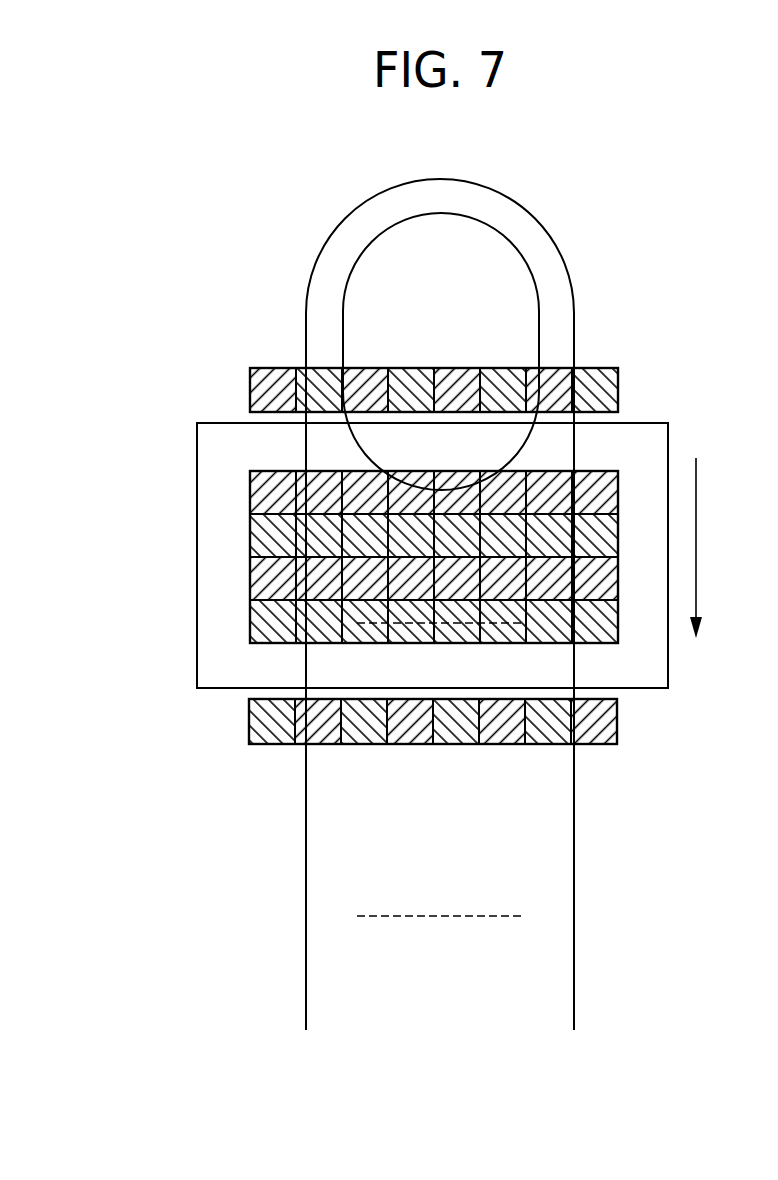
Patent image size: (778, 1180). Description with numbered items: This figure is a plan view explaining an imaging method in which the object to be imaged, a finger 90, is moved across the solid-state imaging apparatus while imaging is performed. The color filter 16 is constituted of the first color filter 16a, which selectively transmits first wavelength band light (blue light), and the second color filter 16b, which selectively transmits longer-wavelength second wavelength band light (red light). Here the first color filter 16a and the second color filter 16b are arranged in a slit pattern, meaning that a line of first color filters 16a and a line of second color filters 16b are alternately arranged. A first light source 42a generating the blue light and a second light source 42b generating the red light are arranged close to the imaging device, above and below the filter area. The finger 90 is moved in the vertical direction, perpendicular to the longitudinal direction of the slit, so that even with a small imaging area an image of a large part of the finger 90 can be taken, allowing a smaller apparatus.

The color filter 16 is at (108, 503).
The first color filter 16a is at (258, 538).
The second color filter 16b is at (258, 590).
The light source 42a is at (250, 395).
The light source 42b is at (249, 722).
The finger 90 is at (563, 817).